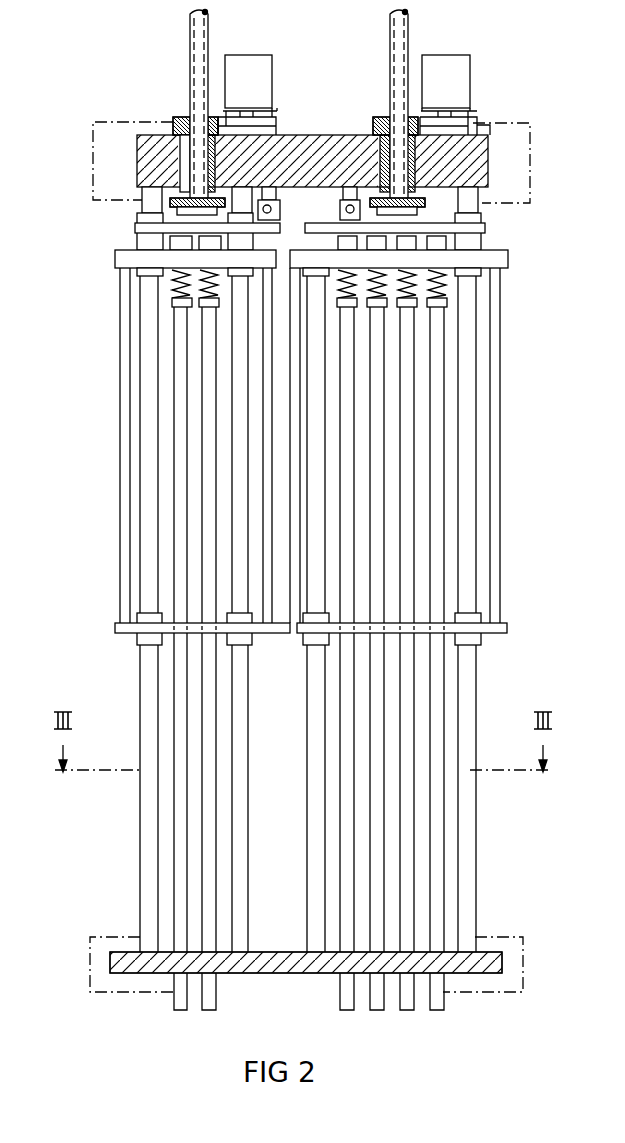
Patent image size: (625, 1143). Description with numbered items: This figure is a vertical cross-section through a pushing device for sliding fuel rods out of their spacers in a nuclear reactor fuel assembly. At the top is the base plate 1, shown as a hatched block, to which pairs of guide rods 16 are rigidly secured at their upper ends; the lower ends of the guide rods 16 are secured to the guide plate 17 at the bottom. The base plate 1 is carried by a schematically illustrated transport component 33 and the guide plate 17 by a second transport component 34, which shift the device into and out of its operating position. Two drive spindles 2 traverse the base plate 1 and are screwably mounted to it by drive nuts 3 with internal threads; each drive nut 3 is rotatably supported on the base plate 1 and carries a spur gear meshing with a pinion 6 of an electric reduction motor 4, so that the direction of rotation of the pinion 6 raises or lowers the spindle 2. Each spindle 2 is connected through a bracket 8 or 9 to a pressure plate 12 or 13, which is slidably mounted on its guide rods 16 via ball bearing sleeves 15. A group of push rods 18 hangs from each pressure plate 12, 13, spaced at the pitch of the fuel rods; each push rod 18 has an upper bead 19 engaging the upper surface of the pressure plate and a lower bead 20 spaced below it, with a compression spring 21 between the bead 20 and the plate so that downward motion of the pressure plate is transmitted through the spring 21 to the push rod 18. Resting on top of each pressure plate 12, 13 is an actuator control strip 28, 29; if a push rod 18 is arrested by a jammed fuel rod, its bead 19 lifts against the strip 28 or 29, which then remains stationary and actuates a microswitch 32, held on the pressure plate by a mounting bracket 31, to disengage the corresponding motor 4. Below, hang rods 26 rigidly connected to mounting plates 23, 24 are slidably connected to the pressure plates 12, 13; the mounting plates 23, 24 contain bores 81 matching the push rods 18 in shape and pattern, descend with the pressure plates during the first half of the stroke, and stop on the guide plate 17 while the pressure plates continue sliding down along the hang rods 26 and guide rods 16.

The base plate 1 is at (142, 156).
The drive spindle 2 is at (194, 31).
The drive nut 3 is at (186, 117).
The electric reduction motor 4 is at (258, 60).
The pinion 6 is at (260, 125).
The bracket 8 is at (172, 203).
The bracket 9 is at (414, 196).
The pressure plate 12 is at (116, 260).
The pressure plate 13 is at (508, 260).
The ball bearing sleeve 15 is at (148, 272).
The guide rod 16 is at (140, 870).
The guide plate 17 is at (116, 963).
The push rod 18 is at (181, 996).
The bead 19 is at (443, 245).
The bead 20 is at (447, 305).
The compression spring 21 is at (183, 292).
The mounting plate 23 is at (115, 629).
The mounting plate 24 is at (507, 629).
The hang rod 26 is at (120, 536).
The actuator control strip 28 is at (135, 228).
The actuator control strip 29 is at (485, 228).
The mounting bracket 31 is at (305, 209).
The microswitch 32 is at (267, 204).
The transport component 33 is at (526, 123).
The transport component 34 is at (523, 946).
The bore 81 is at (348, 634).